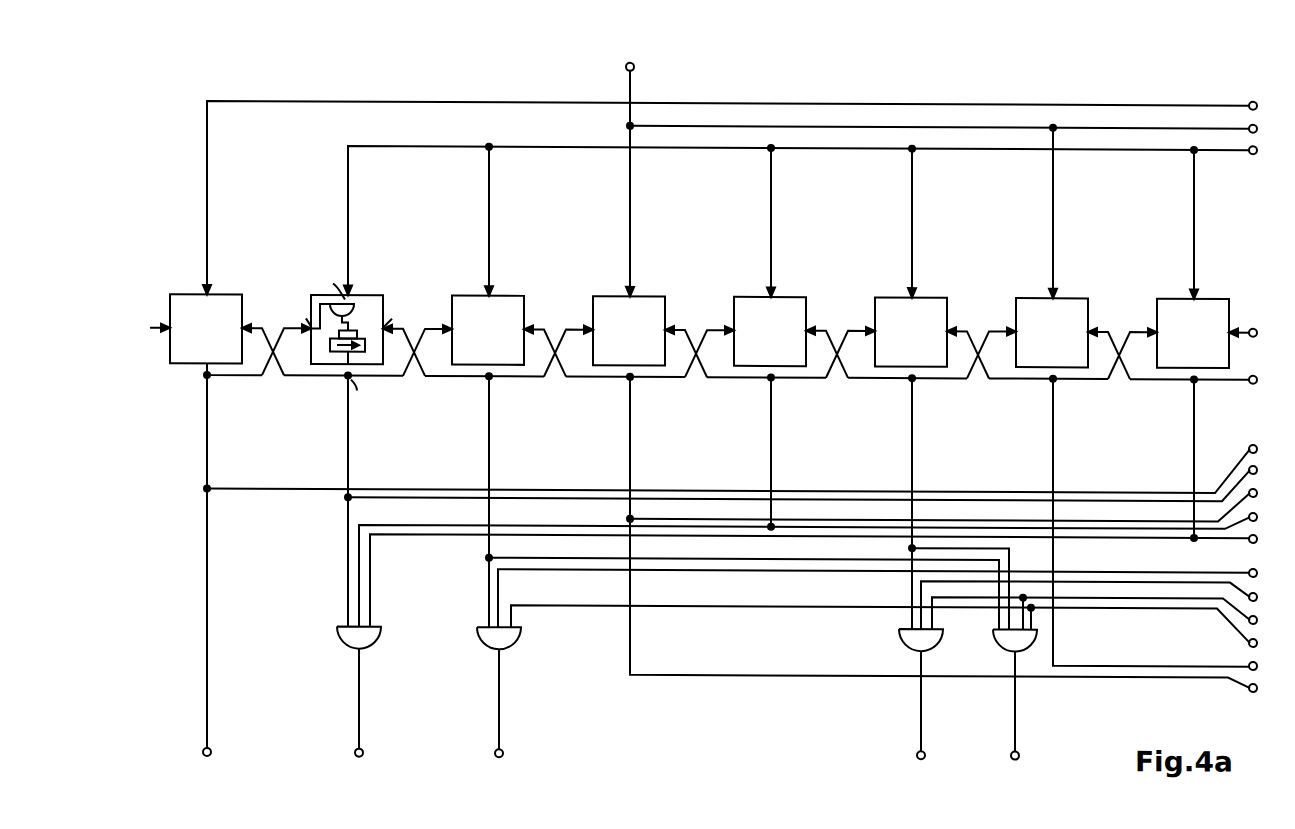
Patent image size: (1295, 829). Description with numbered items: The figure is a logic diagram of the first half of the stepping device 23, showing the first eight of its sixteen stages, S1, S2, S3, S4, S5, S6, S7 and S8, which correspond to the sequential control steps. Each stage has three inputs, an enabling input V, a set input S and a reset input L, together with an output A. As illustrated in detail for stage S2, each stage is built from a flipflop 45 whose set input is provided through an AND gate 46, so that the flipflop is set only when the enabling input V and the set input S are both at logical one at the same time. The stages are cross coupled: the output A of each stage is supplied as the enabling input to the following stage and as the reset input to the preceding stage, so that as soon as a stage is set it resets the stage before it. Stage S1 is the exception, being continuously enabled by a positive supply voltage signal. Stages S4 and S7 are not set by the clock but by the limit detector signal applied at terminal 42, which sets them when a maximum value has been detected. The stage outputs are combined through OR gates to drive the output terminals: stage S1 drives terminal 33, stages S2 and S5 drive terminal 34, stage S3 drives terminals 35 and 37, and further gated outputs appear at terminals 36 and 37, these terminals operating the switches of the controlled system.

The stepping device 23 is at (191, 235).
The terminal 42 is at (643, 170).
The flipflop 45 is at (365, 344).
The AND gate 46 is at (331, 304).
The terminal 33 is at (207, 580).
The terminal 34 is at (359, 706).
The terminal 35 is at (499, 706).
The output terminal with AND gate 36 is at (921, 708).
The terminal 37 is at (1015, 709).
The stage S1 is at (231, 322).
The stage S2 is at (363, 334).
The stage S3 is at (504, 323).
The stage S4 is at (645, 324).
The stage S5 is at (786, 324).
The stage S6 is at (927, 325).
The stage S7 is at (1068, 325).
The stage S8 is at (1193, 327).